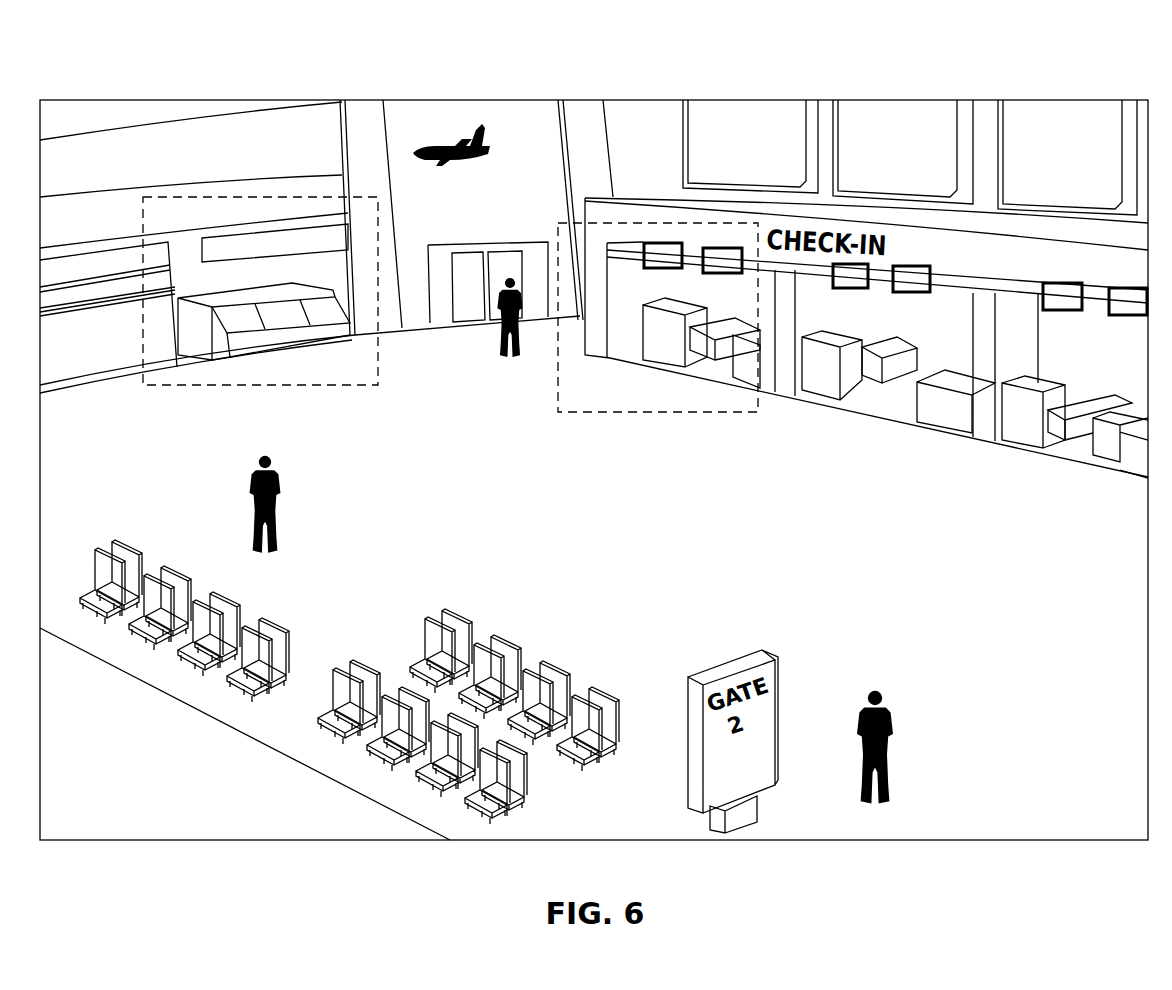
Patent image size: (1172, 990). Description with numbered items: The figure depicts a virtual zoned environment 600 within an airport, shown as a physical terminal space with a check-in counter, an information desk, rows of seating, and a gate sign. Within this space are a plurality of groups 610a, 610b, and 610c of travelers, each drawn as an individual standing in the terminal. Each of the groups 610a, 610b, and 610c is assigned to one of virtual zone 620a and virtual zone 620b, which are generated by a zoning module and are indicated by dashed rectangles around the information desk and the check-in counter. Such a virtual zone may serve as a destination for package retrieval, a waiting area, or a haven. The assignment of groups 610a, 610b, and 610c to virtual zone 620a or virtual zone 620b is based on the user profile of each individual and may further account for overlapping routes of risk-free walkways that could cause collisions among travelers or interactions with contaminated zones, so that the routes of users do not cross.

The virtual zoned environment 600 is at (650, 78).
The group 610a is at (510, 277).
The group 610b is at (265, 455).
The group 610c is at (875, 691).
The virtual zone 620a is at (258, 197).
The virtual zone 620b is at (680, 412).